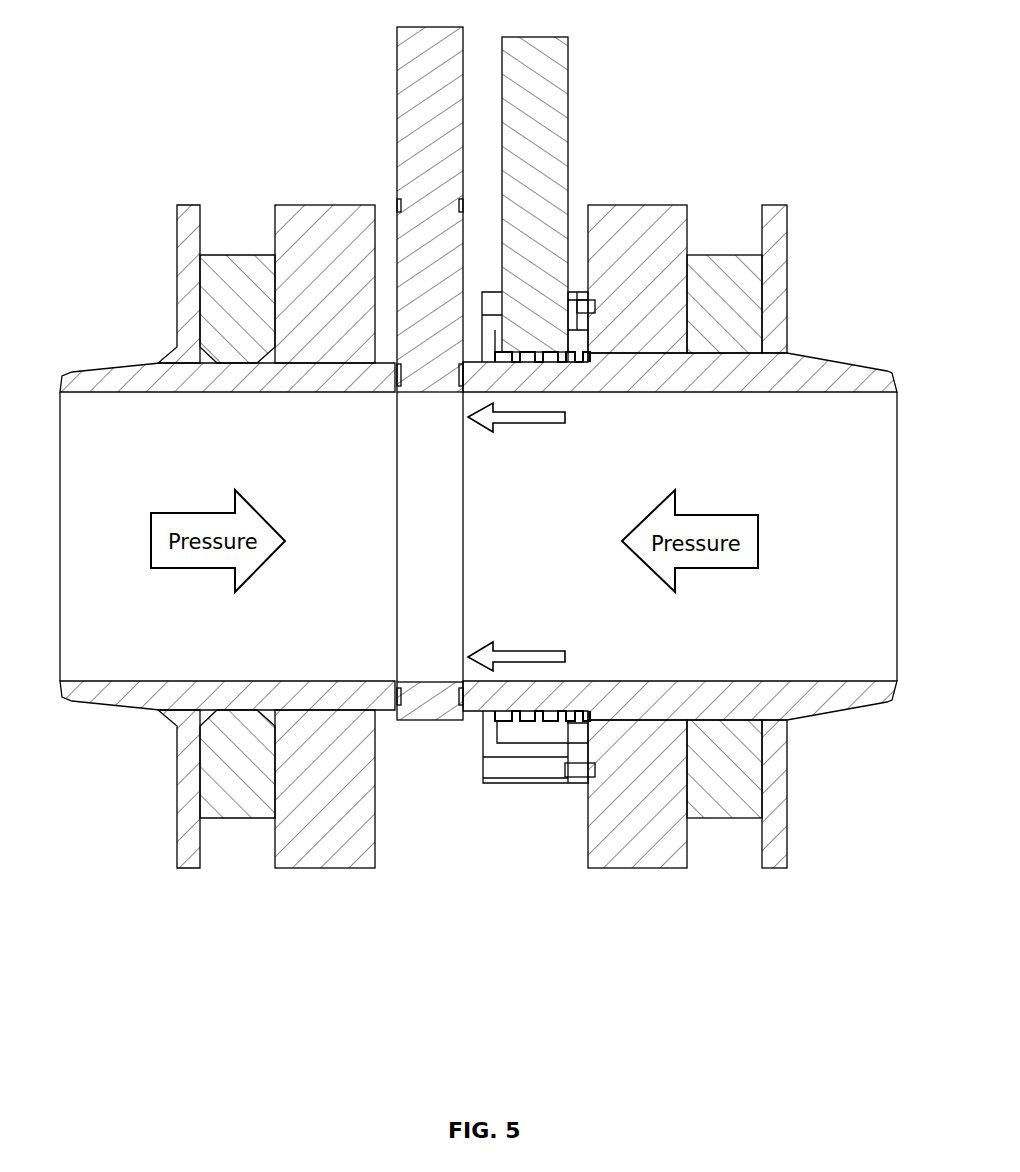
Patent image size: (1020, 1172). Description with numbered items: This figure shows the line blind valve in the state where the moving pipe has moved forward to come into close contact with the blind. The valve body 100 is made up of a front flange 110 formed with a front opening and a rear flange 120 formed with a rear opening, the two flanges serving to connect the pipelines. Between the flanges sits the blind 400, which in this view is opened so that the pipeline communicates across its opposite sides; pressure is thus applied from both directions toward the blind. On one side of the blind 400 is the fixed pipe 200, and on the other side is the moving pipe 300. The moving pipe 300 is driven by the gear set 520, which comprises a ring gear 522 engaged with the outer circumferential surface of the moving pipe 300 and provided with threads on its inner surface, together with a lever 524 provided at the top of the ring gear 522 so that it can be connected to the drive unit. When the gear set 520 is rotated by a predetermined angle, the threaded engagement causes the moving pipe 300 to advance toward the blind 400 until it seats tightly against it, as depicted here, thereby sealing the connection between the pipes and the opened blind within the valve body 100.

The valve body 100 is at (472, 616).
The front flange 110 is at (352, 868).
The rear flange 120 is at (598, 868).
The fixed pipe 200 is at (108, 363).
The moving pipe 300 is at (842, 361).
The blind 400 is at (397, 83).
The gear set 520 is at (640, 410).
The ring gear 522 is at (543, 352).
The lever 524 is at (568, 91).